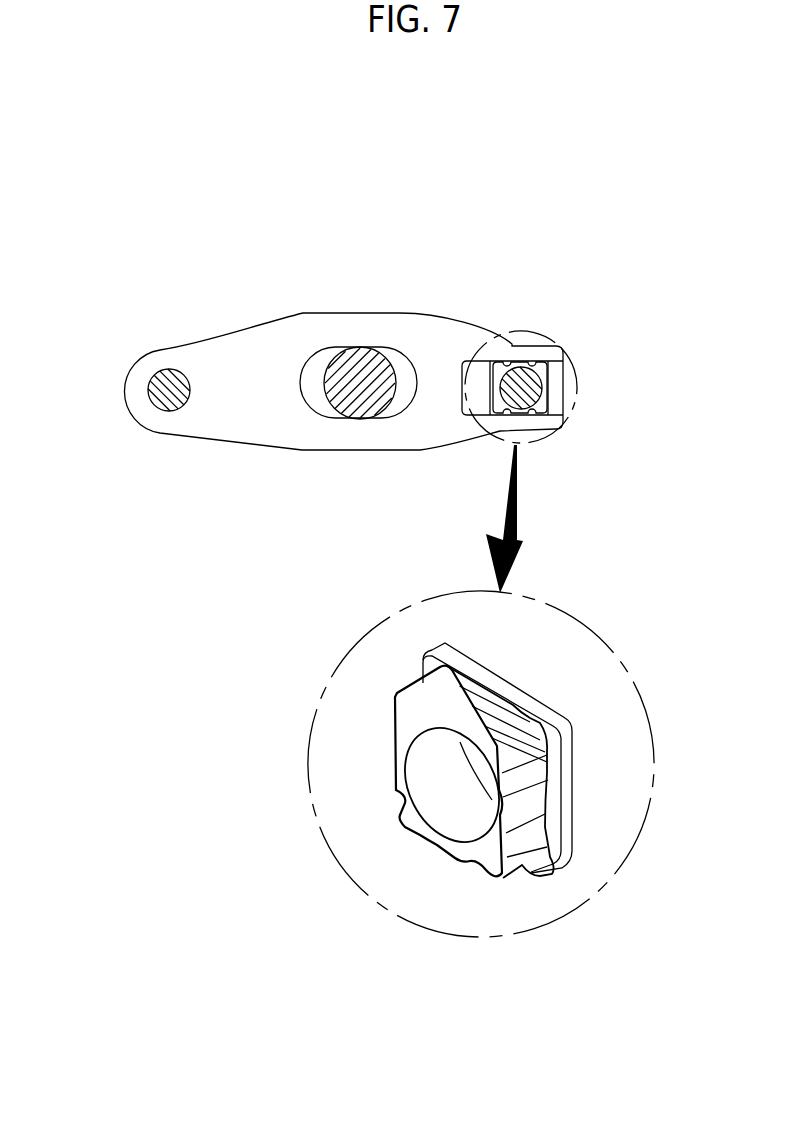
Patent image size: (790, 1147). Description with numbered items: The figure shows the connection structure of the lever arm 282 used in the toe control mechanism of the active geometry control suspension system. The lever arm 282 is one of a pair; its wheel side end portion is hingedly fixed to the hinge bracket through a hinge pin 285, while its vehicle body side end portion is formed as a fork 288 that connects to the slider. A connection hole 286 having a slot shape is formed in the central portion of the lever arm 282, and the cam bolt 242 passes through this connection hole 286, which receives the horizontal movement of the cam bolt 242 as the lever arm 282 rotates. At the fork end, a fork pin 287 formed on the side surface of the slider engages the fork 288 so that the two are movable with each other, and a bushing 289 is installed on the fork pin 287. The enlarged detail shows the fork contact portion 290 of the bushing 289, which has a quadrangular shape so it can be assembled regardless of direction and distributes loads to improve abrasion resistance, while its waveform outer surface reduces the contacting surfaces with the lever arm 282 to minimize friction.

The cam bolt 242 is at (358, 360).
The lever arm 282 is at (436, 440).
The hinge pin 285 is at (150, 393).
The connection hole 286 is at (398, 401).
The fork pin 287 is at (519, 388).
The fork 288 is at (563, 357).
The bushing 289 is at (533, 360).
The fork contact portion 290 is at (425, 692).